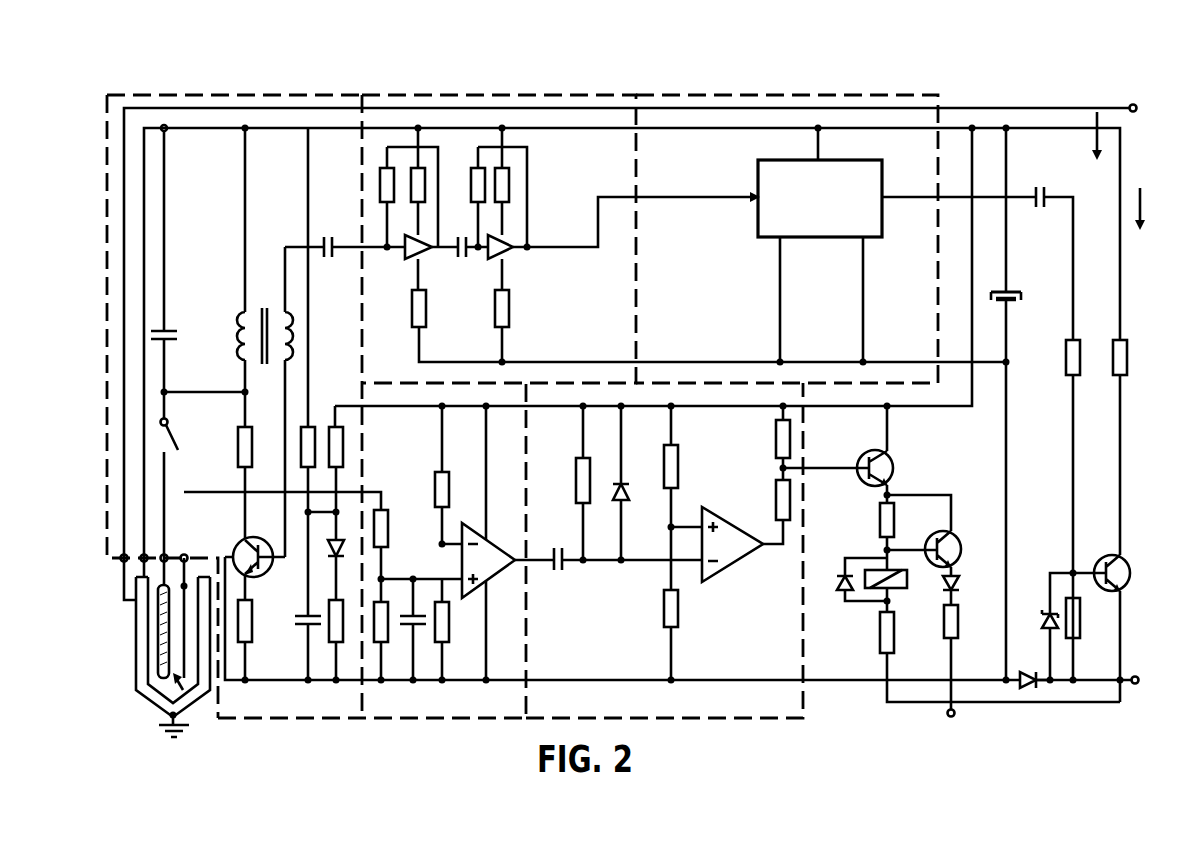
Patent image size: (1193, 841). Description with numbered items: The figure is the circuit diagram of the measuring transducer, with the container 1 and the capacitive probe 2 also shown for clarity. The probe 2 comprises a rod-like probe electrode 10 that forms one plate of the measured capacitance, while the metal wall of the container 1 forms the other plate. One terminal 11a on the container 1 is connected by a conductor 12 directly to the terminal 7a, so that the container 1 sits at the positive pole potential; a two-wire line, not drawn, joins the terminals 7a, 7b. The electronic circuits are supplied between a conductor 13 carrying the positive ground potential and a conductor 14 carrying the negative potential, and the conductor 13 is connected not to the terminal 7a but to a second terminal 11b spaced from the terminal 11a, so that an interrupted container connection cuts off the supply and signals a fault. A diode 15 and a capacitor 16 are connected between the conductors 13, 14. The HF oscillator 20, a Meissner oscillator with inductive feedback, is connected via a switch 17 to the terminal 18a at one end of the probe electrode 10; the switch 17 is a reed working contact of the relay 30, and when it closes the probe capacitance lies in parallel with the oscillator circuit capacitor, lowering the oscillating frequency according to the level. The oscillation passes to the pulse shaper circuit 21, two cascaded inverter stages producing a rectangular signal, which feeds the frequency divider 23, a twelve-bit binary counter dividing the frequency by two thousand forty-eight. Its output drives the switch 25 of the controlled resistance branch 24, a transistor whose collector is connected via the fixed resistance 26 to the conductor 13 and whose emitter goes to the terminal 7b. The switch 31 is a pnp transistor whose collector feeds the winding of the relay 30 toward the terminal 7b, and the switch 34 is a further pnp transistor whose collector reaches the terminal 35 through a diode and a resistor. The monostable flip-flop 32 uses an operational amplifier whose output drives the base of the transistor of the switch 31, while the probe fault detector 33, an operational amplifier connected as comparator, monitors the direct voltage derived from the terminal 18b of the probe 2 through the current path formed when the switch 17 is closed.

The container 1 is at (164, 718).
The capacitive probe 2 is at (183, 694).
The terminal 7a is at (1137, 107).
The terminal 7b is at (1138, 682).
The probe electrode 10 is at (163, 661).
The terminal 11a is at (136, 600).
The second terminal 11b is at (142, 576).
The conductor 12 is at (205, 115).
The conductor 13 is at (296, 127).
The conductor 14 is at (698, 358).
The diode 15 is at (1026, 672).
The capacitor 16 is at (1010, 289).
The switch 17 is at (174, 438).
The terminal 18a is at (166, 579).
The terminal 18b is at (186, 586).
The HF oscillator 20 is at (308, 97).
The pulse shaper circuit 21 is at (504, 97).
The frequency divider 23 is at (844, 97).
The controlled resistance branch 24 is at (1097, 110).
The switch 25 is at (1113, 609).
The fixed resistance 26 is at (1128, 356).
The relay 30 is at (892, 596).
The switch 31 is at (901, 454).
The monostable flip-flop 32 is at (793, 721).
The probe fault detector 33 is at (421, 718).
The switch 34 is at (937, 530).
The terminal 35 is at (948, 716).